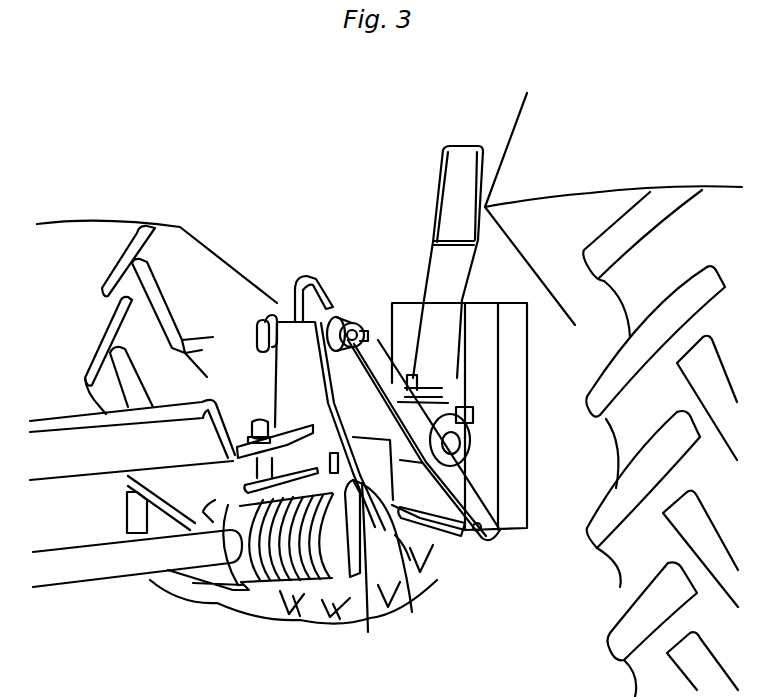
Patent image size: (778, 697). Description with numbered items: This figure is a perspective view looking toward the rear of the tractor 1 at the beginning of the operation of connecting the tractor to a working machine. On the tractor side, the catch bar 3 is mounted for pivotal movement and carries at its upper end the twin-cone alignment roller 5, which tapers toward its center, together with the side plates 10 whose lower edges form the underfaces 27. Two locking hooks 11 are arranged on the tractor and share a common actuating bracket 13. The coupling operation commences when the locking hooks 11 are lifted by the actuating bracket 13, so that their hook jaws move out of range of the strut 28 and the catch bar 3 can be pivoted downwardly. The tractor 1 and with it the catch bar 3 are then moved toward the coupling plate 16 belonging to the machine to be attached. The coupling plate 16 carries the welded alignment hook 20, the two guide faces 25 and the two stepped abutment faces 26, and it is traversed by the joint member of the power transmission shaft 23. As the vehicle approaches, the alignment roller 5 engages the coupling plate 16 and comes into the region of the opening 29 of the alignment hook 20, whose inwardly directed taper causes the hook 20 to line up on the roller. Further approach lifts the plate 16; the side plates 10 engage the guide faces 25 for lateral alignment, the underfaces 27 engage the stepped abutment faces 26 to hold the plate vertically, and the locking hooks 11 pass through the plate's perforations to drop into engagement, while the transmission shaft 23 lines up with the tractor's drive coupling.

The tractor 1 is at (180, 227).
The catch bar 3 is at (352, 377).
The twin-cone roller 5 is at (267, 330).
The side plates 10 is at (422, 447).
The locking hooks 11 is at (440, 390).
The actuating bracket 13 is at (462, 145).
The coupling plate 16 is at (348, 556).
The alignment hook 20 is at (311, 275).
The power transmission shaft 23 is at (75, 572).
The guide faces 25 is at (376, 540).
The stepped abutment faces 26 is at (358, 522).
The underfaces 27 is at (440, 522).
The strut 28 is at (400, 545).
The opening 29 is at (297, 292).